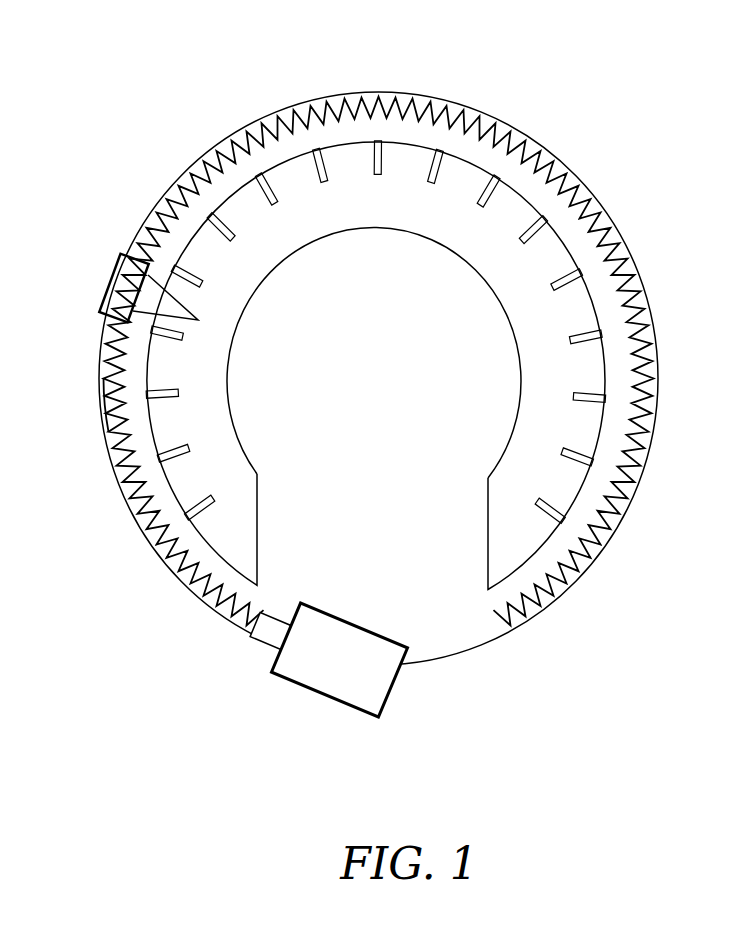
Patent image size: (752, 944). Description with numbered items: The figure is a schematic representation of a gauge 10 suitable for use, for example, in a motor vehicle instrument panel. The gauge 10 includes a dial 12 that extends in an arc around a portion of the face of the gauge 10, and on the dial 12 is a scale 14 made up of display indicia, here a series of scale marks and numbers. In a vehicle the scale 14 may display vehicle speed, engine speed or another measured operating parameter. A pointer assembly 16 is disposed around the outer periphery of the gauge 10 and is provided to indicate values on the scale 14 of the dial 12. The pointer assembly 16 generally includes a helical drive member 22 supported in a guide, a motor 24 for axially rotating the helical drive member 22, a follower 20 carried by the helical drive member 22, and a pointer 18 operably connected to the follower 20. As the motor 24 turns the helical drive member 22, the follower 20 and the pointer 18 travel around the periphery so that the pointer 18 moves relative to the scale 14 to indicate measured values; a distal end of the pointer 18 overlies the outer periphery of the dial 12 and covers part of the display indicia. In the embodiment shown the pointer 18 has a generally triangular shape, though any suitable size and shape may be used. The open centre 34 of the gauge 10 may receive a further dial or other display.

The gauge 10 is at (622, 91).
The dial 12 is at (558, 484).
The scale 14 is at (329, 167).
The pointer assembly 16 is at (98, 449).
The pointer 18 is at (162, 288).
The follower 20 is at (105, 294).
The helical drive member 22 is at (140, 538).
The motor 24 is at (300, 667).
The open centre 34 is at (425, 368).